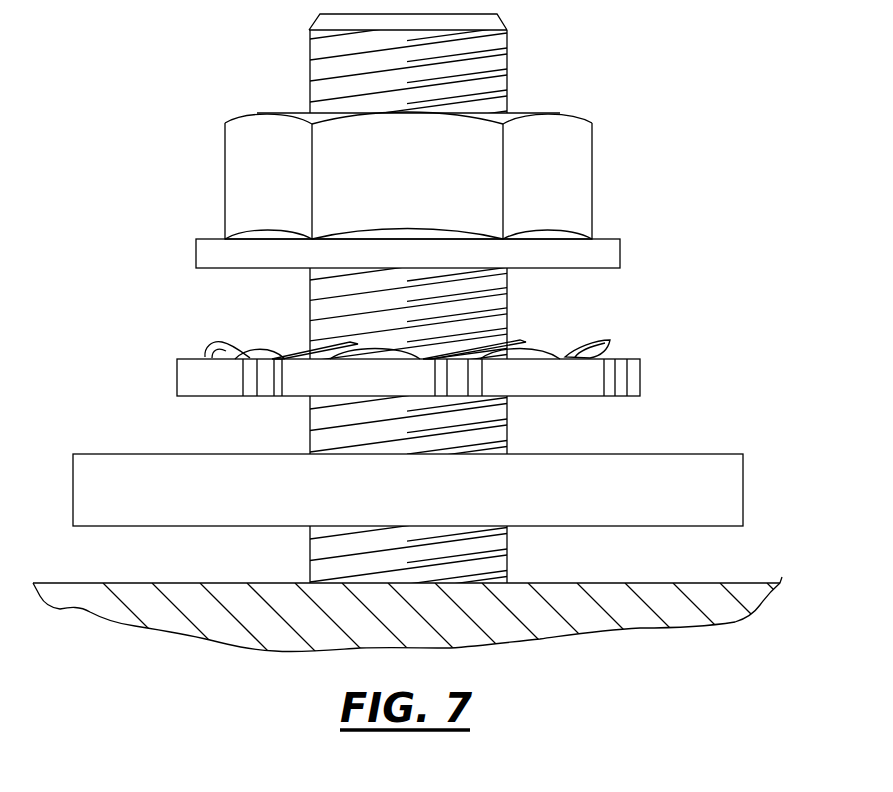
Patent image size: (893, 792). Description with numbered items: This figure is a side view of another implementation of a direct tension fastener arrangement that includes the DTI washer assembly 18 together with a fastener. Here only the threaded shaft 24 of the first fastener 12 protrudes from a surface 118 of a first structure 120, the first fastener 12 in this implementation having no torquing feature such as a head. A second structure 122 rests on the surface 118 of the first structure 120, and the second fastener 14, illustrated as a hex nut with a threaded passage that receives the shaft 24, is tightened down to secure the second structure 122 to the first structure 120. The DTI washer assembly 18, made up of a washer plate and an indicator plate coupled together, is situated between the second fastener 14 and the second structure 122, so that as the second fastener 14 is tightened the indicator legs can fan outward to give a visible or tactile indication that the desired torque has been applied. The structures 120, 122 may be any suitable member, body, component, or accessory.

The first fastener 12 is at (514, 58).
The threaded shaft 24 is at (330, 74).
The second fastener 14 is at (225, 178).
The DTI washer assembly 18 is at (165, 374).
The second structure 122 is at (743, 473).
The first structure 120 is at (55, 583).
The surface 118 is at (170, 583).